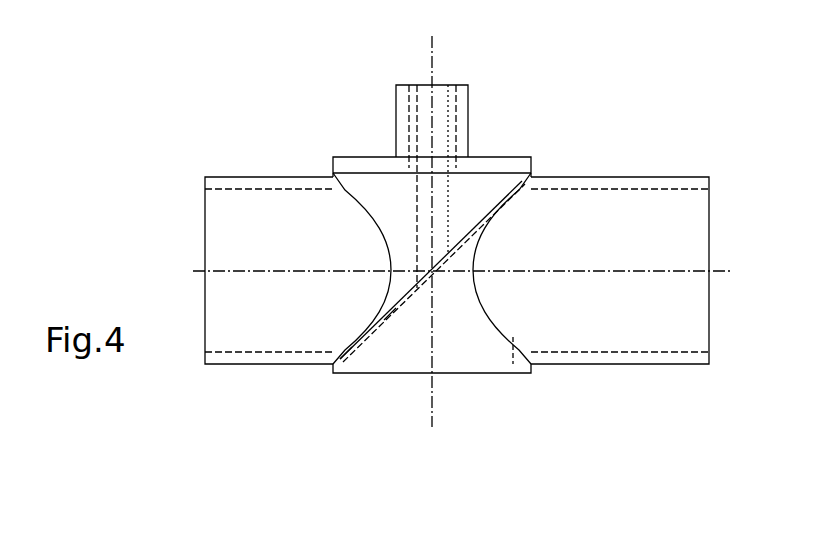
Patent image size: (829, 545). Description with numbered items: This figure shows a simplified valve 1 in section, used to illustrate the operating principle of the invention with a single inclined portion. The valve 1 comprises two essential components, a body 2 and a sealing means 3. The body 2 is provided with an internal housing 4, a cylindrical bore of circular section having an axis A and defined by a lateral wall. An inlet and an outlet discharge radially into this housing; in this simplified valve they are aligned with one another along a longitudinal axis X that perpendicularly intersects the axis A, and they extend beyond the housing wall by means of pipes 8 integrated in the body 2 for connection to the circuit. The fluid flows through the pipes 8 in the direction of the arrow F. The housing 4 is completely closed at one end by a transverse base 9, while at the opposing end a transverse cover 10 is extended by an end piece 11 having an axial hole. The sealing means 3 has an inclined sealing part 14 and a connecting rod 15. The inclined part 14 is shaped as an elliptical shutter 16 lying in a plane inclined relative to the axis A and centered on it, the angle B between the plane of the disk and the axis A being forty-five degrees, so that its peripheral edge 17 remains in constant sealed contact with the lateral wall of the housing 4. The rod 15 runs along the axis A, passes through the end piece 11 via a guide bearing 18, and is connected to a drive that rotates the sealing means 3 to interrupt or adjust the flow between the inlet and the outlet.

The valve 1 is at (556, 101).
The body 2 is at (328, 158).
The sealing means 3 is at (400, 205).
The internal housing 4 is at (488, 340).
The pipes 8 is at (223, 182).
The transverse base 9 is at (503, 338).
The transverse cover 10 is at (513, 165).
The end piece 11 is at (397, 115).
The inclined sealing part 14 is at (437, 277).
The connecting rod 15 is at (438, 108).
The elliptical shutter 16 is at (392, 318).
The peripheral edge 17 is at (347, 352).
The guide bearing 18 is at (413, 90).
The axis of the housing A is at (432, 53).
The angle between inclined plane and axis B is at (474, 219).
The flow direction F is at (199, 247).
The longitudinal axis of inlet and outlet X is at (720, 272).